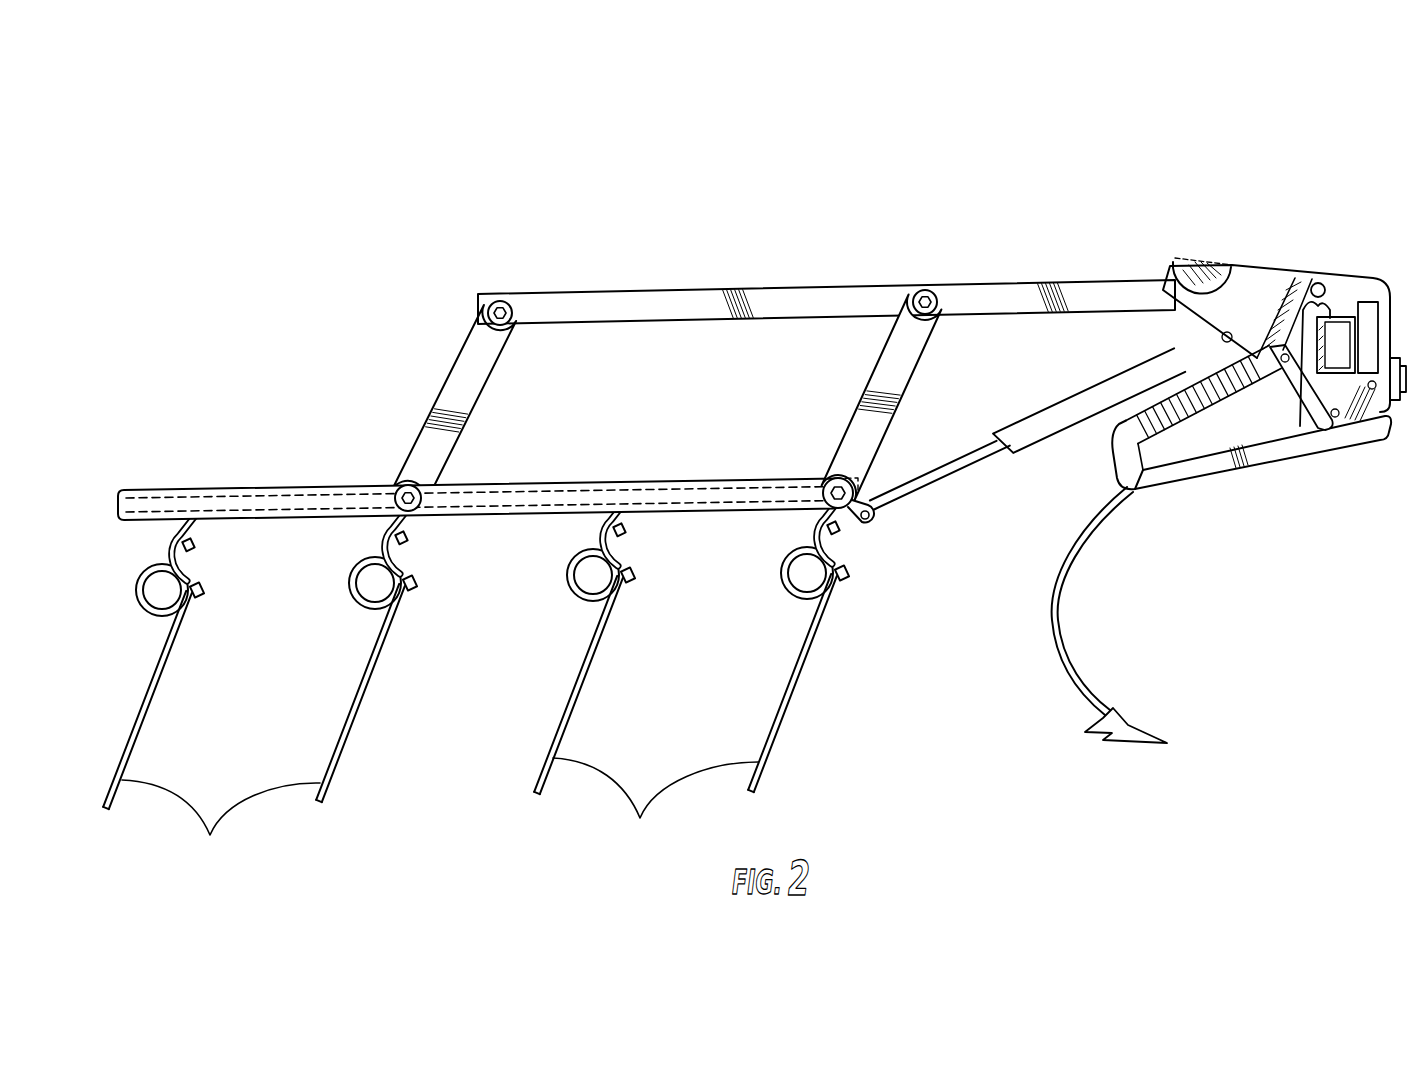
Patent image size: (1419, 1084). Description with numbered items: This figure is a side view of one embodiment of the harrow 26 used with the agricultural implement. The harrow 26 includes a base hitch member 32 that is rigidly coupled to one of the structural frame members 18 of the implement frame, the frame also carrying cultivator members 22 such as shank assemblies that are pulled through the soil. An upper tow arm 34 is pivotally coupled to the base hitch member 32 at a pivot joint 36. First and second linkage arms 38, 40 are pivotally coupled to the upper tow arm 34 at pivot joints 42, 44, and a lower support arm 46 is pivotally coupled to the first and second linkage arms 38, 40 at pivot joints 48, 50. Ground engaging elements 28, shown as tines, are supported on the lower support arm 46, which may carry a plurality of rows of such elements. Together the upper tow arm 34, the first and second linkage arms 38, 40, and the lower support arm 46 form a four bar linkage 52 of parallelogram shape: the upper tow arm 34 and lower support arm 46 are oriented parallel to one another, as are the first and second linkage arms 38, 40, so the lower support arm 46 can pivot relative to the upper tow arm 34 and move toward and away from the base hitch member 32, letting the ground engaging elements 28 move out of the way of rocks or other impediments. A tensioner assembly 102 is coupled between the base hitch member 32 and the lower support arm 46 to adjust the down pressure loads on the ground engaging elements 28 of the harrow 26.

The structural frame member 18 is at (1310, 405).
The cultivator member 22 is at (1048, 660).
The harrow 26 is at (328, 195).
The ground engaging element 28 is at (476, 690).
The base hitch member 32 is at (1268, 262).
The upper tow arm 34 is at (688, 292).
The pivot joint 36 is at (1325, 288).
The first linkage arm 38 is at (868, 372).
The second linkage arm 40 is at (462, 378).
The pivot joint 42 is at (925, 290).
The pivot joint 44 is at (500, 300).
The lower support arm 46 is at (290, 486).
The pivot joint 48 is at (826, 481).
The pivot joint 50 is at (405, 490).
The four bar linkage 52 is at (843, 184).
The tensioner assembly 102 is at (1068, 378).